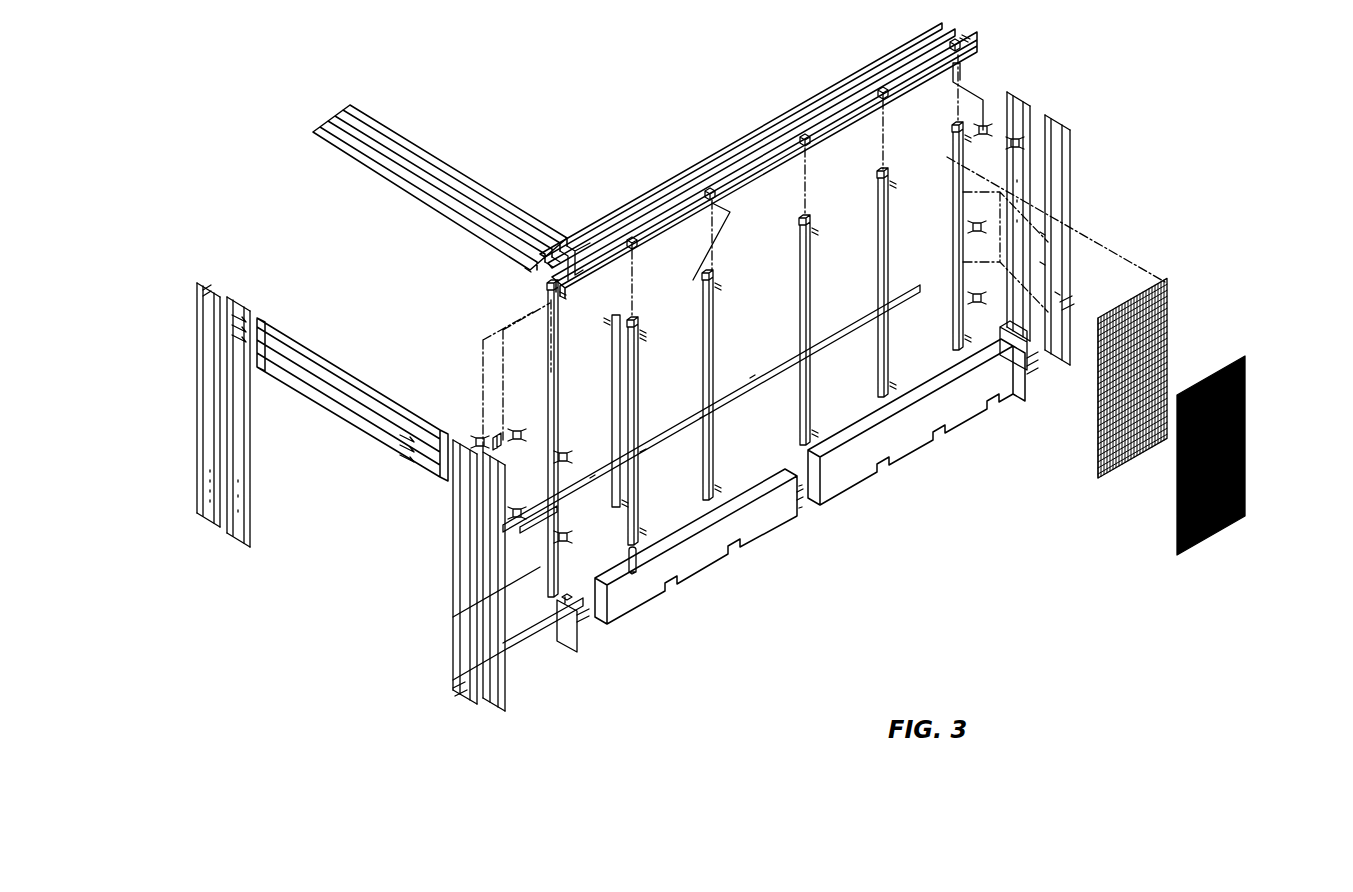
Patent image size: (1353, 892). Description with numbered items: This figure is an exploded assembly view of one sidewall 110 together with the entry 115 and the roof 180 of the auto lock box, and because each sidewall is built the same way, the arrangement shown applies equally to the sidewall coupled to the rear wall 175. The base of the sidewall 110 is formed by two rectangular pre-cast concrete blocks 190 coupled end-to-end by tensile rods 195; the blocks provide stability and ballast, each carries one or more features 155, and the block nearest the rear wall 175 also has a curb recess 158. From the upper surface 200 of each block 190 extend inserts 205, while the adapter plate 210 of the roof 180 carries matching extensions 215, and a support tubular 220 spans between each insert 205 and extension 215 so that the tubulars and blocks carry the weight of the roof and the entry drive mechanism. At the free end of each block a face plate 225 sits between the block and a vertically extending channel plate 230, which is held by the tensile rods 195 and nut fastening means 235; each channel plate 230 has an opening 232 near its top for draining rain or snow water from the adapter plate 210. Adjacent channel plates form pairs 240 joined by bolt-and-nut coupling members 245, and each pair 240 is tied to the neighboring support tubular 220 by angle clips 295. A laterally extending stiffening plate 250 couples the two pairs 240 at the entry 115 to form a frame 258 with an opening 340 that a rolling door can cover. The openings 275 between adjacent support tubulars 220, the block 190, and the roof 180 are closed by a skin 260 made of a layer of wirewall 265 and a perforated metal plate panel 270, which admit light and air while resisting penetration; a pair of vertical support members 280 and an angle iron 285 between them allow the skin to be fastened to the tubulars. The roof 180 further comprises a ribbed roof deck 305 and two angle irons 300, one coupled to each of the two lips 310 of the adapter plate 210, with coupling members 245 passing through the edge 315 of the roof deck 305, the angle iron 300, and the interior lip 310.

The sidewall 110 is at (833, 565).
The entry 115 is at (302, 606).
The features 155 is at (880, 470).
The curb recess 158 is at (998, 390).
The rear wall 175 is at (1086, 58).
The roof 180 is at (580, 130).
The pre-cast concrete blocks 190 is at (718, 562).
The tensile rods 195 is at (590, 625).
The upper surface 200 is at (688, 530).
The inserts 205 is at (636, 575).
The adapter plate 210 is at (930, 62).
The extensions 215 is at (885, 98).
The support tubular 220 is at (890, 240).
The face plate 225 is at (570, 645).
The channel plate 230 is at (218, 292).
The opening 232 is at (500, 445).
The fastening means 235 is at (458, 697).
The pair of channel plates 240 is at (197, 462).
The coupling members 245 is at (250, 300).
The stiffening plate 250 is at (312, 345).
The frame 258 is at (253, 458).
The skin 260 is at (1242, 330).
The wirewall 265 is at (1165, 340).
The perforated metal plate panel 270 is at (1247, 428).
The opening 275 is at (835, 375).
The support members 280 is at (612, 348).
The angle iron 285 is at (730, 415).
The angle clips 295 is at (985, 120).
The angle irons 300 is at (760, 148).
The ribbed roof deck 305 is at (478, 185).
The lips 310 is at (893, 70).
The edge 315 is at (586, 240).
The opening 340 is at (368, 505).